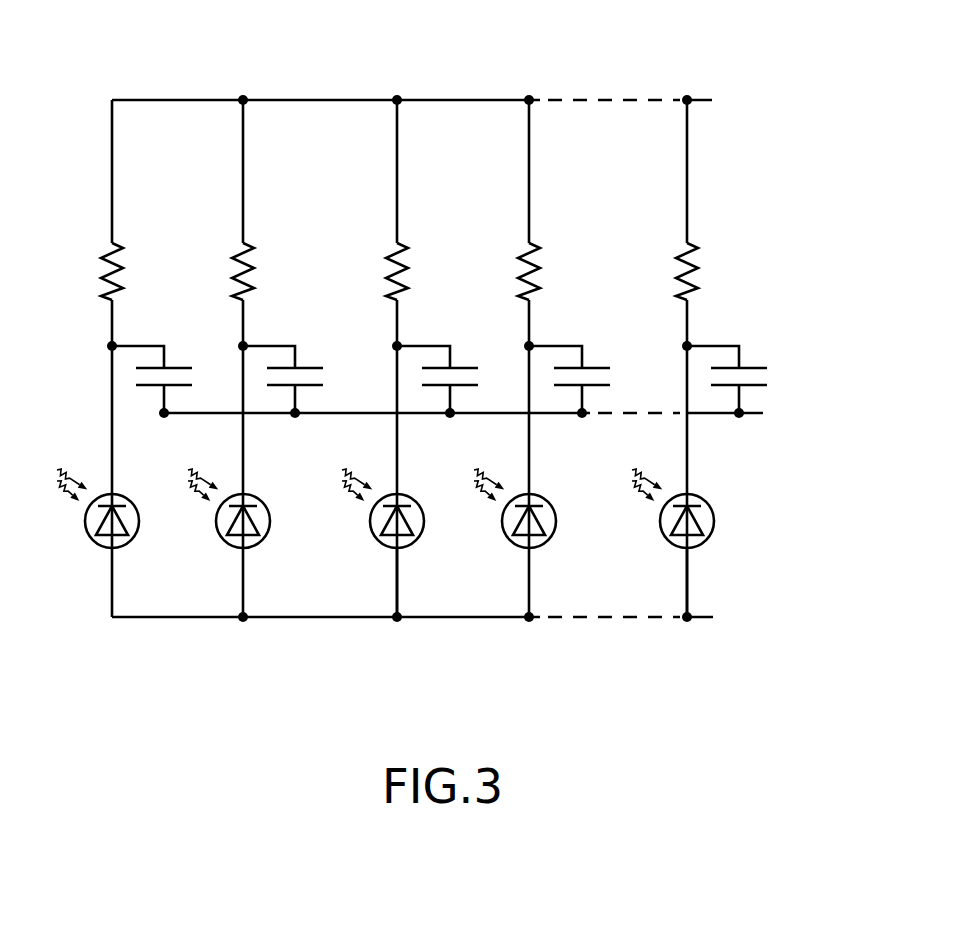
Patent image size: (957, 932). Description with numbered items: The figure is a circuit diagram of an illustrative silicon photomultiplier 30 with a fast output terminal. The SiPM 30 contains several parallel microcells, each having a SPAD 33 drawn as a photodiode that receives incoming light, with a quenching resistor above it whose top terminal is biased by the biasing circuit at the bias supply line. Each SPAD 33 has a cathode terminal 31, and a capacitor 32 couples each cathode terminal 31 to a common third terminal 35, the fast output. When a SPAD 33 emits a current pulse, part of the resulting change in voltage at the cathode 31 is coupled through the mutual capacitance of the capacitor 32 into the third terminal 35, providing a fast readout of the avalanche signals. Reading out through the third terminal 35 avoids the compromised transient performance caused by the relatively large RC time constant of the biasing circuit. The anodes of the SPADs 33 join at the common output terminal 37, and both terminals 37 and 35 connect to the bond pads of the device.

The silicon photomultiplier 30 is at (728, 57).
The cathode terminal 31 is at (112, 490).
The capacitor 32 is at (307, 368).
The SPAD 33 is at (413, 528).
The third terminal 35 is at (755, 413).
The terminal 37 is at (704, 620).